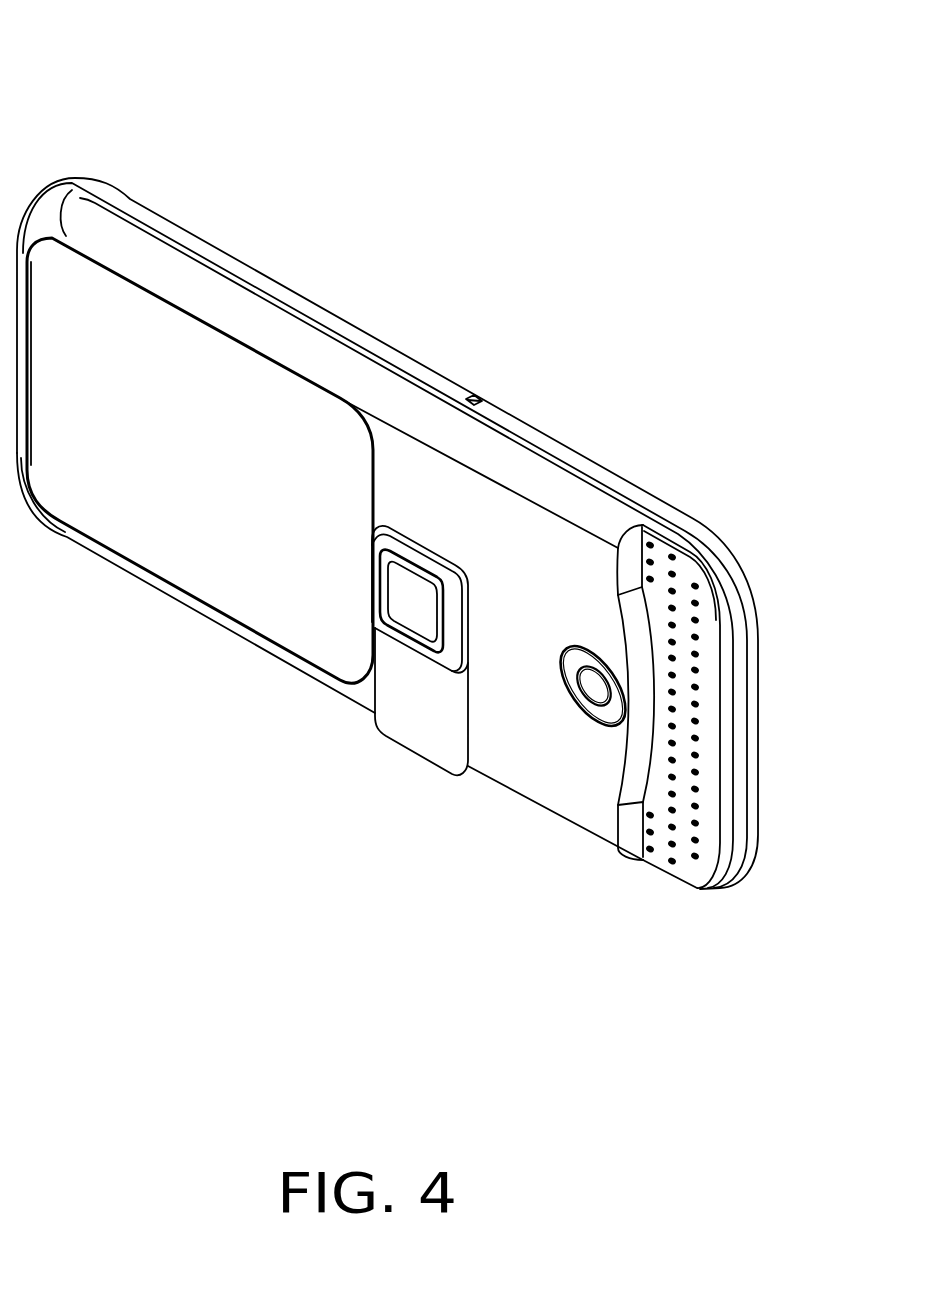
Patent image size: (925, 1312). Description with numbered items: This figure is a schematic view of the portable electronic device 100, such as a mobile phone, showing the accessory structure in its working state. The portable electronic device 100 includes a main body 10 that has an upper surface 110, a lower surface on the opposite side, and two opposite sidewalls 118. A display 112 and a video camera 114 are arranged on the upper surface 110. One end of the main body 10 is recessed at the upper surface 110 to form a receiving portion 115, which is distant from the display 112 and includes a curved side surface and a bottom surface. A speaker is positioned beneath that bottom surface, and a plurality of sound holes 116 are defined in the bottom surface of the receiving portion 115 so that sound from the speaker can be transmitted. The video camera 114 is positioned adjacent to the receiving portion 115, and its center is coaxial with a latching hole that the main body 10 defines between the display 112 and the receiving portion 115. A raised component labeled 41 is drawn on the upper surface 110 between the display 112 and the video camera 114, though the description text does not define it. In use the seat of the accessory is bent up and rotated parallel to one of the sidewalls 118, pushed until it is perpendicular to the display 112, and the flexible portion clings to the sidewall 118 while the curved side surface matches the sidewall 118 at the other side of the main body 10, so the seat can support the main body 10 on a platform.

The portable electronic device 100 is at (177, 92).
The main body 10 is at (621, 474).
The display 112 is at (218, 367).
The sidewall 118 is at (428, 383).
The key module 41 is at (410, 697).
The upper surface 110 is at (526, 746).
The video camera 114 is at (607, 710).
The receiving portion 115 is at (703, 752).
The sound holes 116 is at (698, 654).